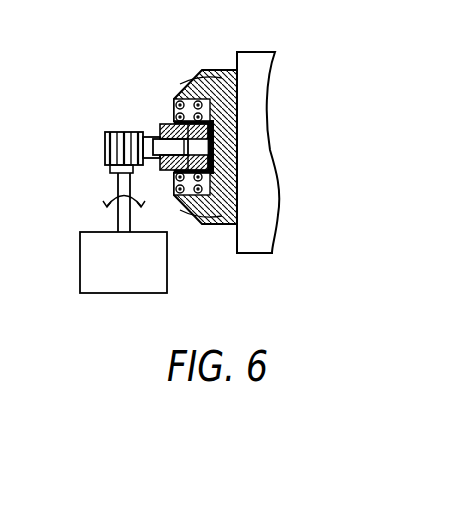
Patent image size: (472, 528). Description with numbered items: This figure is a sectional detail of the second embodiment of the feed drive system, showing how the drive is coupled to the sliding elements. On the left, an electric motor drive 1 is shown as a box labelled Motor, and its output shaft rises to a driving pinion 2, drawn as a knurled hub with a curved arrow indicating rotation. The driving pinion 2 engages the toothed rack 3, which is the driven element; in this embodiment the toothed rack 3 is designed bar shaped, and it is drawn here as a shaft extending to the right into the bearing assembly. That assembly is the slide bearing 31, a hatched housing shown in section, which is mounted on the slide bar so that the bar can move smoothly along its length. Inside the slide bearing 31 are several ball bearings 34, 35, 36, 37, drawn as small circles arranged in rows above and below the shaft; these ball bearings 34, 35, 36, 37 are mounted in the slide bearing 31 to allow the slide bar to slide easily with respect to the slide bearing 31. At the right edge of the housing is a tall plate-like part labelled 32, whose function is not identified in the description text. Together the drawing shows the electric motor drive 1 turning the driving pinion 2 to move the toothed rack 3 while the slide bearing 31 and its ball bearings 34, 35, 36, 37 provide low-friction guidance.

The electric motor drive 1 is at (80, 249).
The driving pinion 2 is at (104, 140).
The toothed rack 3 is at (150, 135).
The slide bearing 31 is at (200, 70).
The mounting plate 32 is at (258, 243).
The ball bearing 34 is at (215, 138).
The ball bearing 35 is at (212, 85).
The ball bearing 36 is at (216, 114).
The ball bearing 37 is at (204, 97).